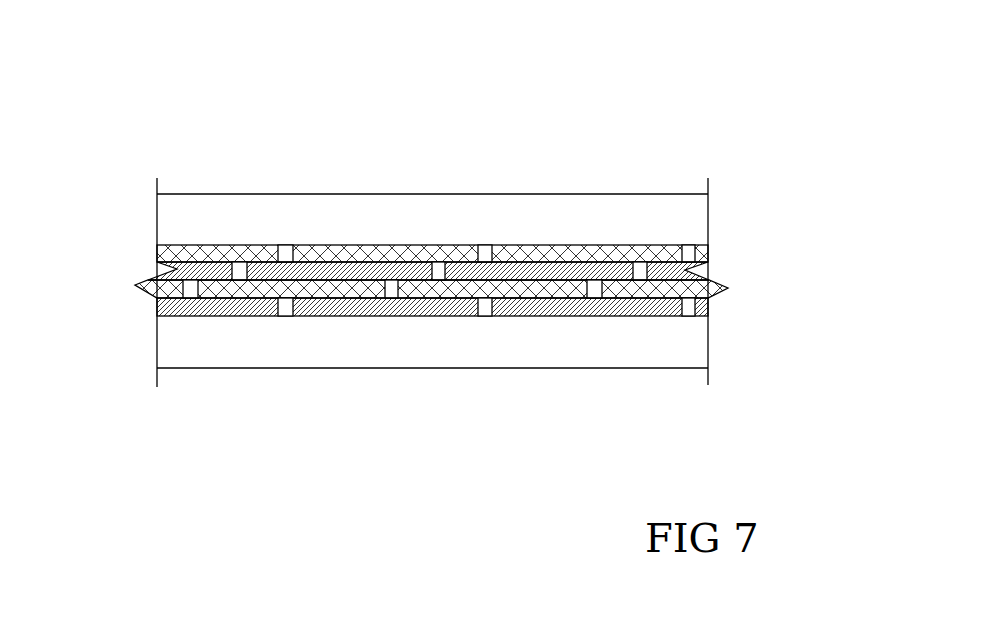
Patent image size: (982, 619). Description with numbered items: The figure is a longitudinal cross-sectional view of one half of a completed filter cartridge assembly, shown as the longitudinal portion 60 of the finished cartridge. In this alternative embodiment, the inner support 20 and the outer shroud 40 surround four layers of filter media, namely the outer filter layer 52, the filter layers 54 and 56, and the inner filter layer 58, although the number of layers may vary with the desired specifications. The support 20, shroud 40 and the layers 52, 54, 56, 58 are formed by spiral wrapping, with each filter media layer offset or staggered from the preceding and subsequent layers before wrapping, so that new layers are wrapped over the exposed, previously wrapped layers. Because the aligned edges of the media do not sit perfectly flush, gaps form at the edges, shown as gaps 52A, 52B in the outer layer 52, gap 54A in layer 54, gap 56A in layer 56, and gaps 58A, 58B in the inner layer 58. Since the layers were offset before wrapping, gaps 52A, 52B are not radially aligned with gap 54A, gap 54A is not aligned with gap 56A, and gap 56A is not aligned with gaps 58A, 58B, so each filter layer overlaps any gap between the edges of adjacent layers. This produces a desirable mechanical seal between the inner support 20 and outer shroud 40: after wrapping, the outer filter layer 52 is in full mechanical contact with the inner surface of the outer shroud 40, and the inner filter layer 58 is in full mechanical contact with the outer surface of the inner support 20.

The inner support 20 is at (558, 215).
The outer shroud 40 is at (502, 350).
The outer filter layer 52 is at (385, 385).
The gap 52A is at (288, 313).
The gap 52B is at (688, 316).
The filter media layer 54 is at (477, 373).
The gap 54A is at (388, 292).
The filter media layer 56 is at (388, 198).
The gap 56A is at (437, 268).
The inner filter layer 58 is at (491, 171).
The gap 58A is at (285, 252).
The gap 58B is at (690, 252).
The longitudinal portion of finished cartridge assembly 60 is at (458, 140).